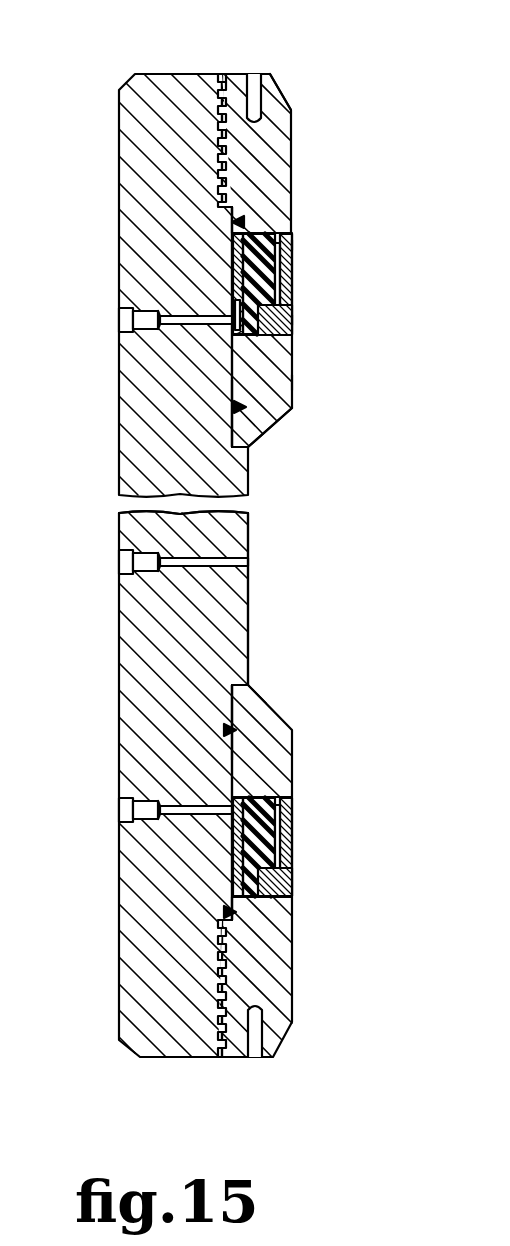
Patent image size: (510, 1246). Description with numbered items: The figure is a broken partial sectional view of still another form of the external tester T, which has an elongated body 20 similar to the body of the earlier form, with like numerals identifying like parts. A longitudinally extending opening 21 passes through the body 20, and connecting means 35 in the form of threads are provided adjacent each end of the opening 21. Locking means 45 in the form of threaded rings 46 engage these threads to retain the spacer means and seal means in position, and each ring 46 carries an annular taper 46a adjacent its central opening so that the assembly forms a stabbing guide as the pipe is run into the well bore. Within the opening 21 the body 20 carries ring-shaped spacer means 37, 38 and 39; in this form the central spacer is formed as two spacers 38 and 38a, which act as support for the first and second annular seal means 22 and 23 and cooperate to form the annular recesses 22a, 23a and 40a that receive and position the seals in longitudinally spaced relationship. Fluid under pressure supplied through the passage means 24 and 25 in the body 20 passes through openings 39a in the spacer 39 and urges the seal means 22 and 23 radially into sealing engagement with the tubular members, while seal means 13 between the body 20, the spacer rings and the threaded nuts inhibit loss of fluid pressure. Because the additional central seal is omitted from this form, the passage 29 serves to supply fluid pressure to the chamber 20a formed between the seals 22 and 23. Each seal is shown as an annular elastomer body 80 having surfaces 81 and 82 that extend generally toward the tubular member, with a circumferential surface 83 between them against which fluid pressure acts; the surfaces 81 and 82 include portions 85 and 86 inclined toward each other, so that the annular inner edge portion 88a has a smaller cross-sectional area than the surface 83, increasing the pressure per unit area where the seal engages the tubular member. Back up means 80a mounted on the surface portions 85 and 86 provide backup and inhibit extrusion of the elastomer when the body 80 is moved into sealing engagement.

The external tester T is at (119, 130).
The body 20 is at (160, 441).
The chamber 20a is at (302, 540).
The opening 21 is at (300, 405).
The spacer 38 is at (278, 718).
The spacer 38a is at (283, 420).
The connecting means 35 is at (240, 148).
The locking means 45 is at (226, 66).
The threaded ring 46 is at (248, 86).
The annular taper 46a is at (287, 84).
The surface 81 is at (288, 208).
The annular elastomer body 80 is at (232, 248).
The back up means 80a is at (293, 245).
The first annular seal means 22 is at (232, 262).
The annular recess 22a is at (240, 280).
The surface portion 85 is at (288, 256).
The annular inner edge portion 88a is at (292, 275).
The surface portion 86 is at (285, 305).
The surface 82 is at (293, 352).
The circumferential surface 83 is at (232, 335).
The spacer 39 is at (176, 311).
The openings 39a is at (295, 382).
The passage means 24 is at (122, 322).
The seal means 13 is at (236, 407).
The fluid passage means 29 is at (183, 554).
The annular recess 40a is at (248, 585).
The passage means 25 is at (122, 810).
The second annular seal means 23 is at (232, 840).
The annular recess 23a is at (232, 856).
The spacer means 37 is at (232, 893).